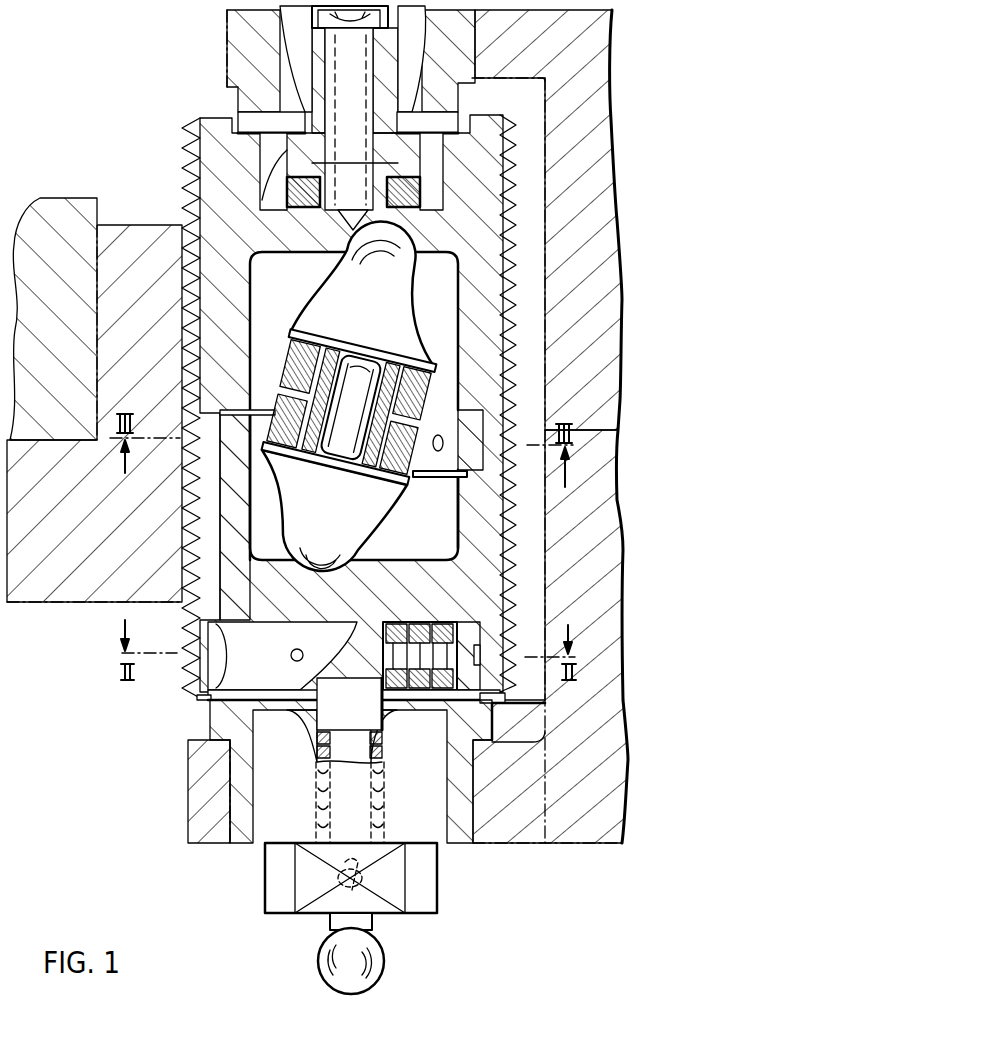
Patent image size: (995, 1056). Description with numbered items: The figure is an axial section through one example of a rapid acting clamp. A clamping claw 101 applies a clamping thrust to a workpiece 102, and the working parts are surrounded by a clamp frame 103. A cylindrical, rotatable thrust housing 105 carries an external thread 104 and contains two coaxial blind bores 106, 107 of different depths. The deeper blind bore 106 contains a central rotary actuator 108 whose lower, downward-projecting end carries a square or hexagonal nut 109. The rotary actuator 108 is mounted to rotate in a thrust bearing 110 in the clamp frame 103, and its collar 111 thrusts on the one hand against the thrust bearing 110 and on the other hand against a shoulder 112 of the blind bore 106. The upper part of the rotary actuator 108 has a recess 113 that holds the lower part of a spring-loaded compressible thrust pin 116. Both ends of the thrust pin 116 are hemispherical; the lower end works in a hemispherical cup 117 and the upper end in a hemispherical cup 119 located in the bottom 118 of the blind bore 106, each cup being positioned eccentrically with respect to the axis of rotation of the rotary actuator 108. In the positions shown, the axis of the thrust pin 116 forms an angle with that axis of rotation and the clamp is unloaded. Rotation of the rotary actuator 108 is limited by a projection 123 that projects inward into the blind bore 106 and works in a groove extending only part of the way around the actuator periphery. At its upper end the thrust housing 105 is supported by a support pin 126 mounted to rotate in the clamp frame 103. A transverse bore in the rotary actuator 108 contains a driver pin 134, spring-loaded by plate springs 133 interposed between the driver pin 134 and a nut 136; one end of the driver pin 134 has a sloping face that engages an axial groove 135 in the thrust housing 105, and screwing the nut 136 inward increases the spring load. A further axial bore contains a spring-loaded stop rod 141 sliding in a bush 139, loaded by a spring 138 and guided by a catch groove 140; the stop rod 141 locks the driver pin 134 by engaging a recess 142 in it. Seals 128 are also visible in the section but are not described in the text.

The clamping claw 101 is at (100, 588).
The workpiece 102 is at (62, 208).
The clamp frame 103 is at (585, 44).
The external thread 104 is at (183, 143).
The thrust housing 105 is at (220, 318).
The blind bore 106 is at (240, 410).
The blind bore 107 is at (266, 200).
The rotary actuator 108 is at (232, 498).
The nut 109 is at (305, 914).
The thrust bearing 110 is at (228, 783).
The collar 111 is at (260, 700).
The shoulder 112 is at (505, 700).
The recess 113 is at (460, 532).
The thrust pin 116 is at (333, 438).
The hemispherical cup 117 is at (296, 598).
The bottom of the blind bore 118 is at (278, 252).
The hemispherical cup 119 is at (400, 238).
The projection 123 is at (480, 412).
The support pin 126 is at (410, 100).
The seal 128 is at (405, 193).
The plate springs 133 is at (433, 622).
The driver pin 134 is at (272, 679).
The groove 135 is at (205, 699).
The nut 136 is at (466, 628).
The spring 138 is at (383, 752).
The bush 139 is at (315, 874).
The catch groove 140 is at (380, 878).
The stop rod 141 is at (378, 958).
The recess 142 is at (355, 680).